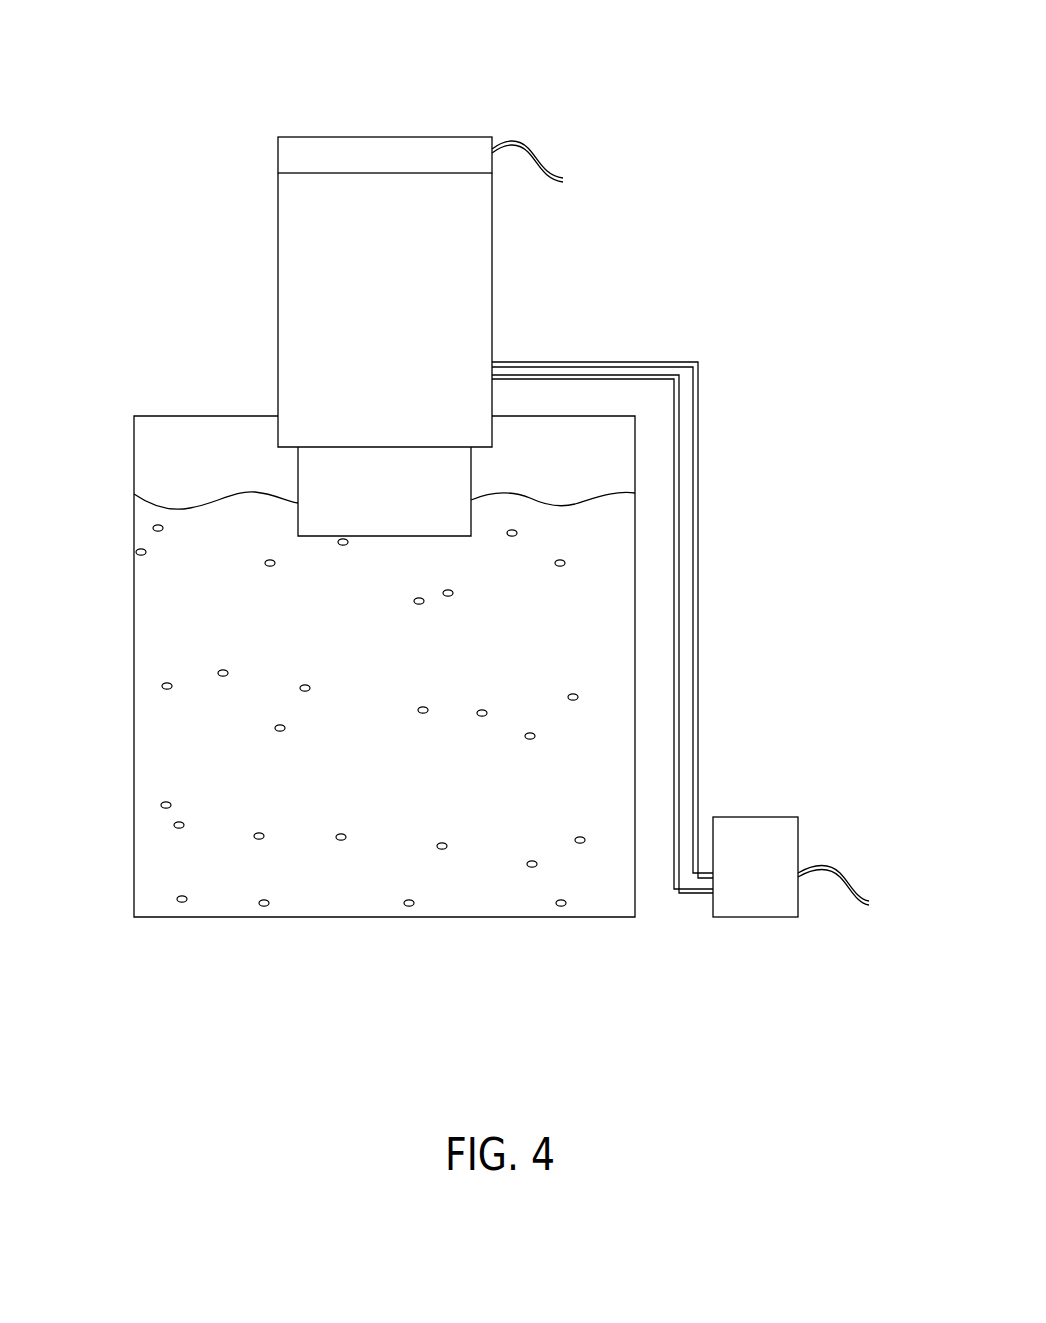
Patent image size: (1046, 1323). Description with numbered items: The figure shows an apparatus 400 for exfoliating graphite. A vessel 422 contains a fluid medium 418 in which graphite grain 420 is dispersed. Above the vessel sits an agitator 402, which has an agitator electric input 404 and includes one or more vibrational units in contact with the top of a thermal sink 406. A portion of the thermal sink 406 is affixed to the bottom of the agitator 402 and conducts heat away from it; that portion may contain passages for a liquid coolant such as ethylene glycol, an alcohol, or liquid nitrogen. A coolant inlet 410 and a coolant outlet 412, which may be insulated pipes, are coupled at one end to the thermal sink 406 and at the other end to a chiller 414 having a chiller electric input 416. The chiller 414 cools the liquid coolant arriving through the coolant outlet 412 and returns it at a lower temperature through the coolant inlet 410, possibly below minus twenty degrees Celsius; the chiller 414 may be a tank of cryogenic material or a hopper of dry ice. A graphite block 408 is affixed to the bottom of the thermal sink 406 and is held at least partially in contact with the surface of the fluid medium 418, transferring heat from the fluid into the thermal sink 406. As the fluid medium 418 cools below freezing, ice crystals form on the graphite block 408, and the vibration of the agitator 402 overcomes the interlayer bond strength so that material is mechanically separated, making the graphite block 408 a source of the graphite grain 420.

The apparatus 400 is at (372, 50).
The agitator 402 is at (330, 134).
The agitator electric input 404 is at (539, 150).
The thermal sink 406 is at (497, 277).
The graphite block 408 is at (296, 476).
The coolant inlet 410 is at (701, 593).
The coolant outlet 412 is at (684, 694).
The chiller 414 is at (756, 811).
The chiller electric input 416 is at (845, 871).
The fluid medium 418 is at (216, 496).
The graphite grain 420 is at (214, 673).
The vessel 422 is at (131, 787).